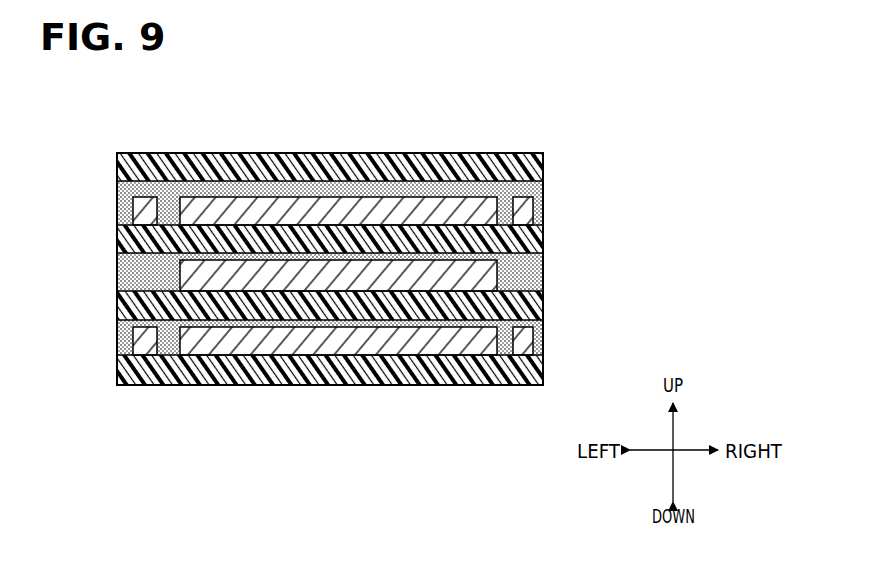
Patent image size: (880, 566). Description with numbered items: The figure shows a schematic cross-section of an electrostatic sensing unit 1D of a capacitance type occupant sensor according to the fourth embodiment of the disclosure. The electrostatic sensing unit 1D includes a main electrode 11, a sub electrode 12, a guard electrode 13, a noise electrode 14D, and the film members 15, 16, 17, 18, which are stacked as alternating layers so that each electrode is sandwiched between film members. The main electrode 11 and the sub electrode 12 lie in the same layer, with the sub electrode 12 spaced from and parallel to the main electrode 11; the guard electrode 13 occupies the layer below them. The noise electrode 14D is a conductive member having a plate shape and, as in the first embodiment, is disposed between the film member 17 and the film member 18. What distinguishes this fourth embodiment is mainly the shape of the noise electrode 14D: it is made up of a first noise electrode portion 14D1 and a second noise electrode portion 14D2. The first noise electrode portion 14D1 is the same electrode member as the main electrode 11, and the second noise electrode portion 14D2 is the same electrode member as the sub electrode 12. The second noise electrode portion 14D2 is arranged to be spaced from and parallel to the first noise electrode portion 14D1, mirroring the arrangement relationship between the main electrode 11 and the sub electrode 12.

The electrostatic sensing unit 1D is at (566, 122).
The main electrode 11 is at (330, 202).
The sub electrode 12 is at (118, 198).
The guard electrode 13 is at (198, 273).
The noise electrode 14D is at (222, 447).
The first noise electrode portion 14D1 is at (218, 345).
The second noise electrode portion 14D2 is at (140, 340).
The film member 15 is at (543, 165).
The film member 16 is at (543, 238).
The film member 17 is at (543, 305).
The film member 18 is at (543, 370).